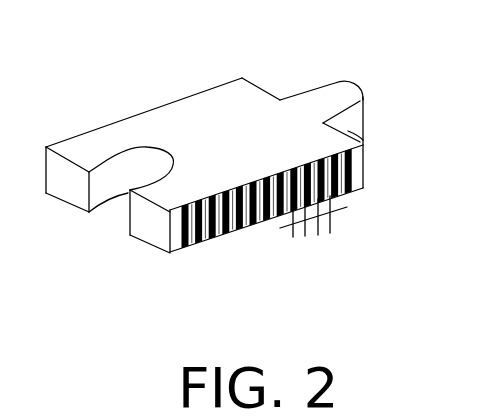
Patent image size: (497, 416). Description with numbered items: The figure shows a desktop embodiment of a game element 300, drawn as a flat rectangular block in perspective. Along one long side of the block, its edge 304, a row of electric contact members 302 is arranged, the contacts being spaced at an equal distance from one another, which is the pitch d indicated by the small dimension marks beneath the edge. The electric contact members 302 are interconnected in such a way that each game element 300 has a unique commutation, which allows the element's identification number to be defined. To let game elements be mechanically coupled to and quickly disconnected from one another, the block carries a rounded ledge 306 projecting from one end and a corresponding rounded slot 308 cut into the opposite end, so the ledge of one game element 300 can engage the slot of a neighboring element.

The game element 300 is at (187, 122).
The electric contact members 302 is at (233, 230).
The edge 304 is at (335, 173).
The ledge 306 is at (312, 105).
The slot 308 is at (118, 207).
The pitch d is at (313, 222).